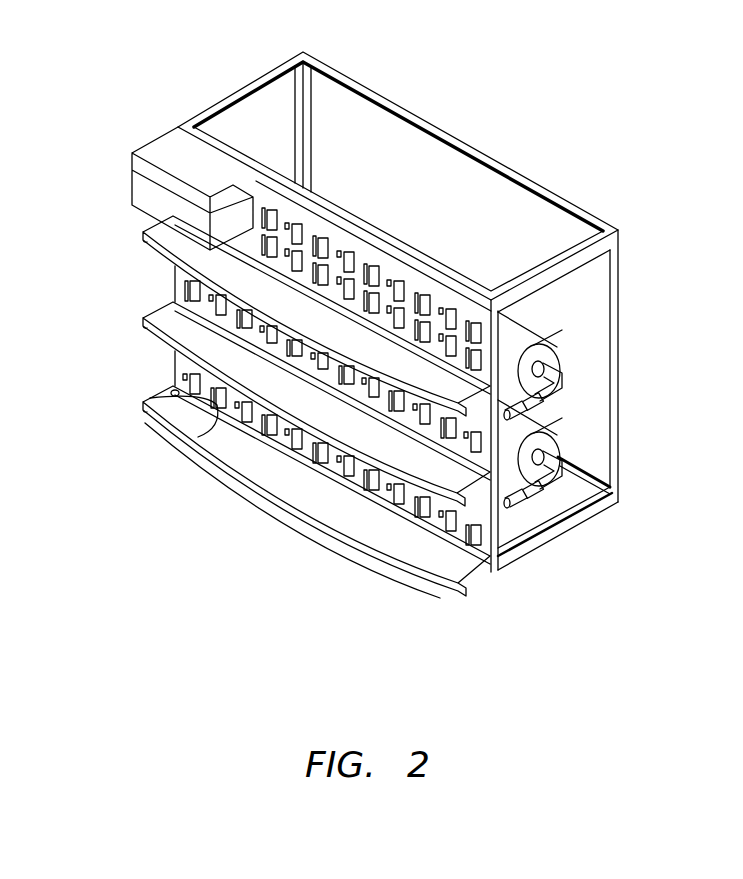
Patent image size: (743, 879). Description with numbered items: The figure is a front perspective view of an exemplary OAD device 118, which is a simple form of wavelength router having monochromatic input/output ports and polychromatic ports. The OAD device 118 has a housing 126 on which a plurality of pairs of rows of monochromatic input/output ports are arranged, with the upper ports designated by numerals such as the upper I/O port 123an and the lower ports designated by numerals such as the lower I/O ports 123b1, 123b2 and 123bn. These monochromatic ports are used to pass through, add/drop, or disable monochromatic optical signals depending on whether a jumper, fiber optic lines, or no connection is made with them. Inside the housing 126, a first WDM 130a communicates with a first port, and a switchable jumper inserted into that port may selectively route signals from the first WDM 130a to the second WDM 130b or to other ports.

The OAD device 118 is at (465, 69).
The housing 126 is at (568, 210).
The first WDM 130a is at (530, 338).
The second WDM 130b is at (540, 432).
The lower I/O port 123b1 is at (172, 390).
The lower I/O port 123b2 is at (170, 437).
The upper I/O port 123an is at (483, 512).
The lower I/O port 123bn is at (507, 555).